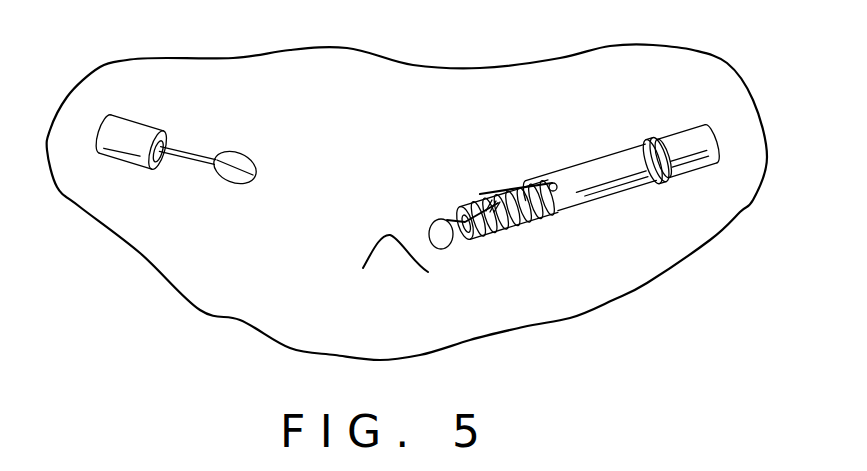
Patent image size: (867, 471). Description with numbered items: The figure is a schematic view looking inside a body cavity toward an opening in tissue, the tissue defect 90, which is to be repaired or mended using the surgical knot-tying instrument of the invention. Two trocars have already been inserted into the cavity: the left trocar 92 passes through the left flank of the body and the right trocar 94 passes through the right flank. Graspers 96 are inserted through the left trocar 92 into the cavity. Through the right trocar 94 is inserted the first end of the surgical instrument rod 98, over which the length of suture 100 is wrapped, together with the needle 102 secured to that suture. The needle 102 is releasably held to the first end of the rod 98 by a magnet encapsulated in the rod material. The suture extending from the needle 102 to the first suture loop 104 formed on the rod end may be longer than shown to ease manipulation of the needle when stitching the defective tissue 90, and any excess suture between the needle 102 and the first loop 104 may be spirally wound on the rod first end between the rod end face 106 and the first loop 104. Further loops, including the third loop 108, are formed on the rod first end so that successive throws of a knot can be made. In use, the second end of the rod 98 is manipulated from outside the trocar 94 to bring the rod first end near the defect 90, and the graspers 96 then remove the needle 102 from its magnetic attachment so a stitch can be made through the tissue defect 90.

The tissue defect 90 is at (386, 266).
The left trocar 92 is at (138, 128).
The right trocar 94 is at (683, 142).
The graspers 96 is at (180, 160).
The surgical instrument rod 98 is at (603, 183).
The length of suture 100 is at (447, 252).
The needle 102 is at (474, 206).
The first suture loop 104 is at (485, 230).
The rod end face 106 is at (492, 197).
The third loop of suture 108 is at (524, 222).